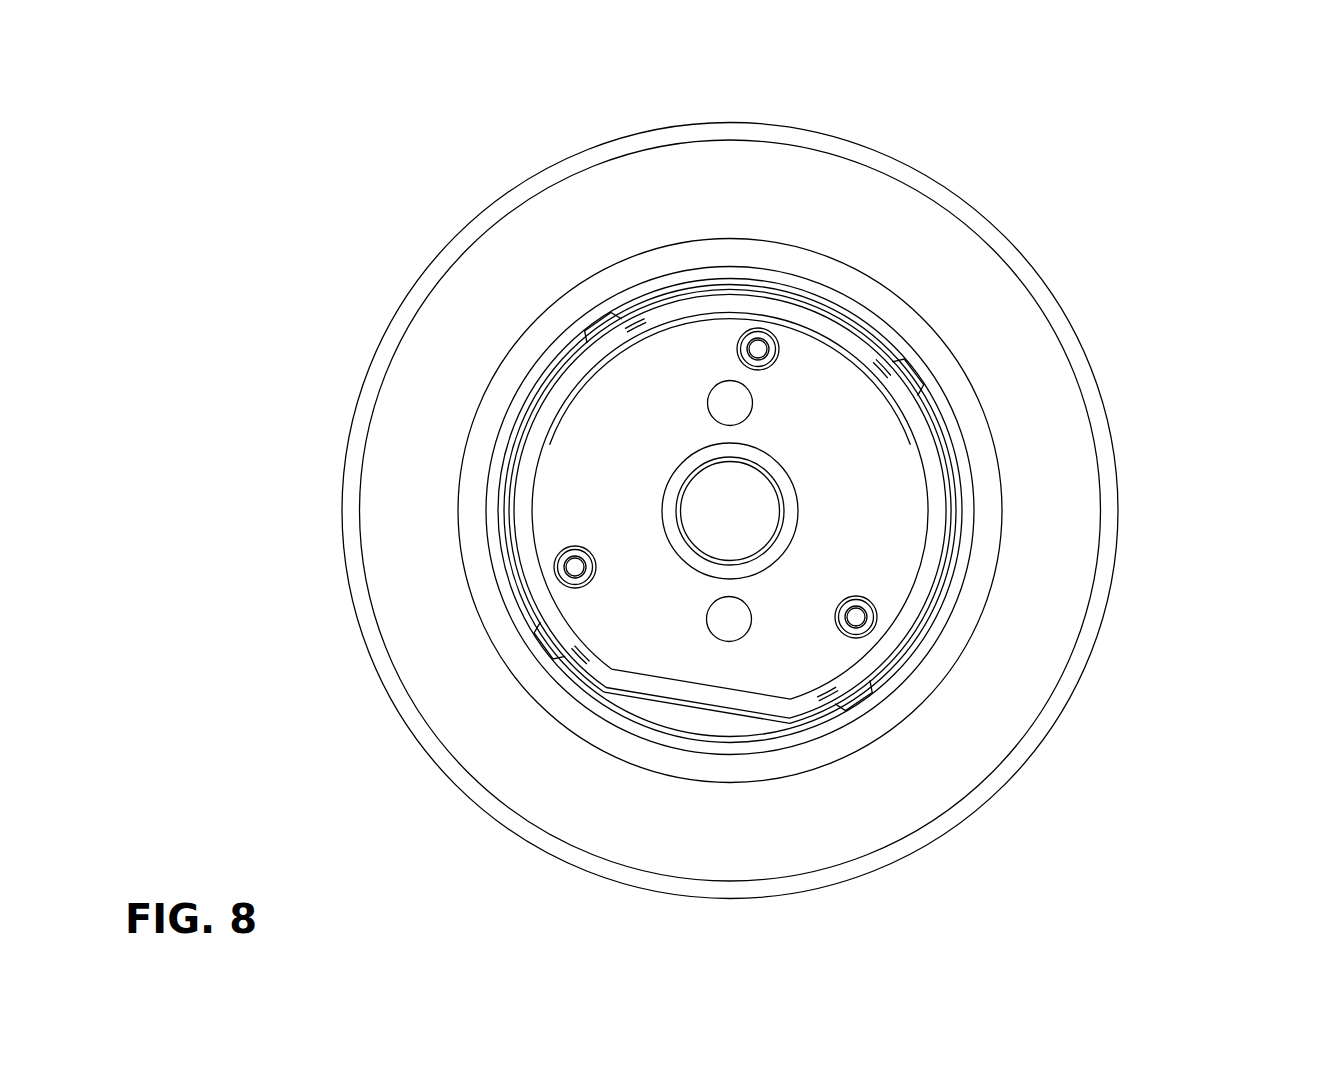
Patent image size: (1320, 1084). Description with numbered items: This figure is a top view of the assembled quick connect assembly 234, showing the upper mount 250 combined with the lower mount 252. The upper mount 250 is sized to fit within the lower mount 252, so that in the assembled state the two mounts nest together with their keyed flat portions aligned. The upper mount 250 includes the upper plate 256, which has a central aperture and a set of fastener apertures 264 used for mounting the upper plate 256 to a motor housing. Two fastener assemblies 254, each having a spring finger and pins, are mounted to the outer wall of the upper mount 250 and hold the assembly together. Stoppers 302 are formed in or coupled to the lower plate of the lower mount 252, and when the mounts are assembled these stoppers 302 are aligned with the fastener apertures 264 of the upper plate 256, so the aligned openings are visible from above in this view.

The quick connect assembly 234 is at (274, 90).
The upper mount 250 is at (520, 483).
The lower mount 252 is at (512, 447).
The fastener assembly 254 is at (562, 405).
The upper plate 256 is at (874, 488).
The fastener apertures 264 is at (737, 351).
The stoppers 302 is at (760, 350).